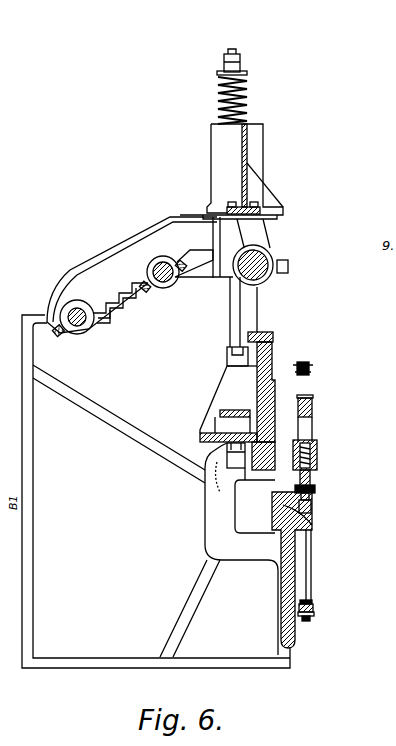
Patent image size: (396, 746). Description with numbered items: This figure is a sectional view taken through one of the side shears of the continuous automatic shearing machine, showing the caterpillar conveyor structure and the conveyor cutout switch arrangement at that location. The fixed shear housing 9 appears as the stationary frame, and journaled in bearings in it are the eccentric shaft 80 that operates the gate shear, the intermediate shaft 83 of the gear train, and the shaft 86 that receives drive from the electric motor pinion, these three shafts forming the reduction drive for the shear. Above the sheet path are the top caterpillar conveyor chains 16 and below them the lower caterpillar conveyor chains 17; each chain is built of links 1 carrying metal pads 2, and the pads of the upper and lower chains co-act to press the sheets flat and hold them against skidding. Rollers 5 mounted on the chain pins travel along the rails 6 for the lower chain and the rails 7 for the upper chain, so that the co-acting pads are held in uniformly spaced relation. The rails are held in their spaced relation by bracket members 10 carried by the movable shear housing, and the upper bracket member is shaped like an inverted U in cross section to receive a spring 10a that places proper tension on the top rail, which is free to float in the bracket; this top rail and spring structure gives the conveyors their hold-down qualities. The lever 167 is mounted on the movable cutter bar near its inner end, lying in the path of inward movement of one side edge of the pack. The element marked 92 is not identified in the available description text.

The fixed shear housing 9 is at (40, 435).
The eccentric shaft 80 is at (273, 254).
The intermediate shaft 83 is at (150, 270).
The shaft 86 is at (82, 327).
The lever 167 is at (247, 432).
The bracket members 10 is at (314, 444).
The spring 10a is at (317, 451).
The rails 7 is at (311, 479).
The top caterpillar conveyor chains 16 is at (316, 488).
The lower caterpillar conveyor chains 17 is at (316, 493).
The rails 6 is at (312, 507).
The wedge plate 92 is at (298, 515).
The rollers 5 is at (309, 365).
The links 1 is at (314, 608).
The metal pads 2 is at (312, 618).